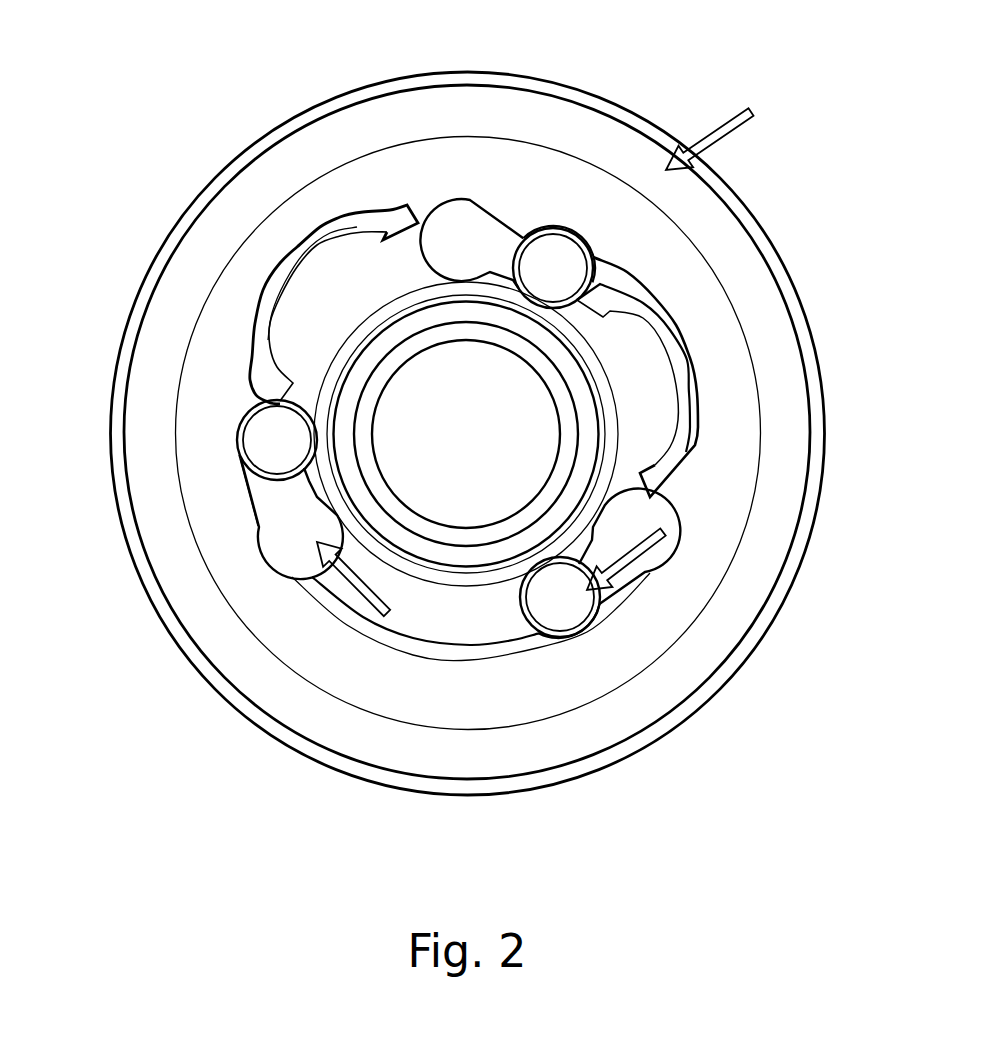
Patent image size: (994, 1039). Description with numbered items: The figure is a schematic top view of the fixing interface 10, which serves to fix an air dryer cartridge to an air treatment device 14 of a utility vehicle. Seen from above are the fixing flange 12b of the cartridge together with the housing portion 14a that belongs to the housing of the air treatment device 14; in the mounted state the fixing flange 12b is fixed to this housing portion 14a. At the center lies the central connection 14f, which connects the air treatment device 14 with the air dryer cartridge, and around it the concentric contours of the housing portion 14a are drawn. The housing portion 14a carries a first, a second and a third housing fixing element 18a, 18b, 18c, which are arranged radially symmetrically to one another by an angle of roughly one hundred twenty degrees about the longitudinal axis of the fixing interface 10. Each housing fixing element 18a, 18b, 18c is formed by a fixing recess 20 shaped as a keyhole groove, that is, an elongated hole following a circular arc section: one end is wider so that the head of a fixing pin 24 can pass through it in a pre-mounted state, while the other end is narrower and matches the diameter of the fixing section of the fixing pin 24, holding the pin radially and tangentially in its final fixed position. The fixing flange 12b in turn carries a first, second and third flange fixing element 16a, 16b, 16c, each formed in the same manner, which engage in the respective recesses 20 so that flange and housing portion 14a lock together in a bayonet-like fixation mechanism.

The fixing interface 10 is at (190, 201).
The fixing flange 12b is at (745, 275).
The air treatment device 14 is at (447, 496).
The housing portion 14a is at (537, 464).
The central connection 14f is at (560, 402).
The first flange fixing element 16a is at (305, 487).
The second flange fixing element 16b is at (490, 265).
The third flange fixing element 16c is at (594, 547).
The first housing fixing element 18a is at (232, 440).
The second housing fixing element 18b is at (582, 218).
The third housing fixing element 18c is at (590, 637).
The fixing recess 20 is at (467, 203).
The fixing pin 24 is at (560, 275).